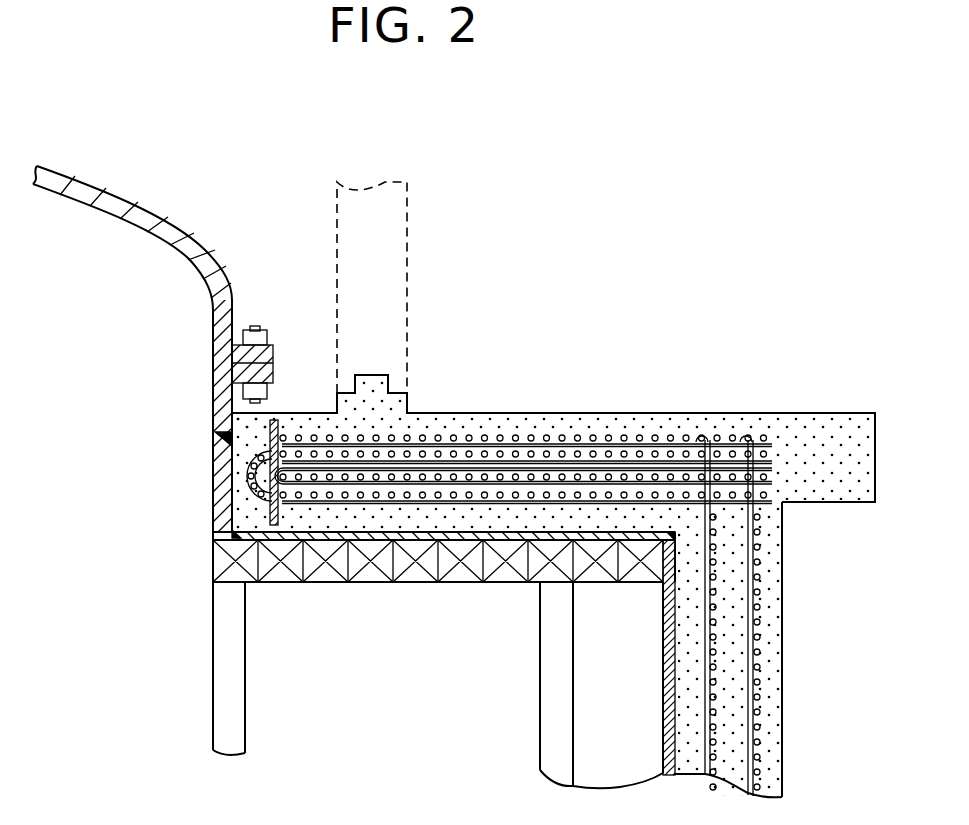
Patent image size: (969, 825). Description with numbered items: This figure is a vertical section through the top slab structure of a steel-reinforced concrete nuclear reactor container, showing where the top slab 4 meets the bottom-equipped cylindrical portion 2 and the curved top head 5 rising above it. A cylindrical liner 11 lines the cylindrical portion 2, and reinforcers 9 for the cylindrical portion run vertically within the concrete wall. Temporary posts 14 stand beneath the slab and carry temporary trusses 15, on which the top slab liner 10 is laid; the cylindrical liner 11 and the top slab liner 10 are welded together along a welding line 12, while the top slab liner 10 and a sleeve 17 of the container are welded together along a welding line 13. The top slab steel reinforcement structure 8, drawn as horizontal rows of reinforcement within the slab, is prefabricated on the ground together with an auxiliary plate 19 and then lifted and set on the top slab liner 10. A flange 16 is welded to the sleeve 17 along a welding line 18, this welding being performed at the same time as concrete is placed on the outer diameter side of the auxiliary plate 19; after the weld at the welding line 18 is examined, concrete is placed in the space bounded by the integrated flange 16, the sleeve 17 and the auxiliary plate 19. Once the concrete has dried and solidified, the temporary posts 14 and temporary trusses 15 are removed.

The bottom-equipped cylindrical portion 2 is at (772, 662).
The top slab 4 is at (587, 418).
The top head 5 is at (172, 231).
The top slab steel reinforcement structure 8 is at (490, 436).
The reinforcers for the cylindrical portion 9 is at (758, 622).
The top slab liner 10 is at (480, 548).
The cylindrical liner 11 is at (667, 648).
The welding line 12 is at (677, 537).
The welding line 13 is at (233, 533).
The temporary posts 14 is at (238, 647).
The temporary trusses 15 is at (398, 560).
The flange 16 is at (272, 377).
The sleeve 17 is at (217, 483).
The welding line 18 is at (215, 442).
The auxiliary plate 19 is at (275, 422).